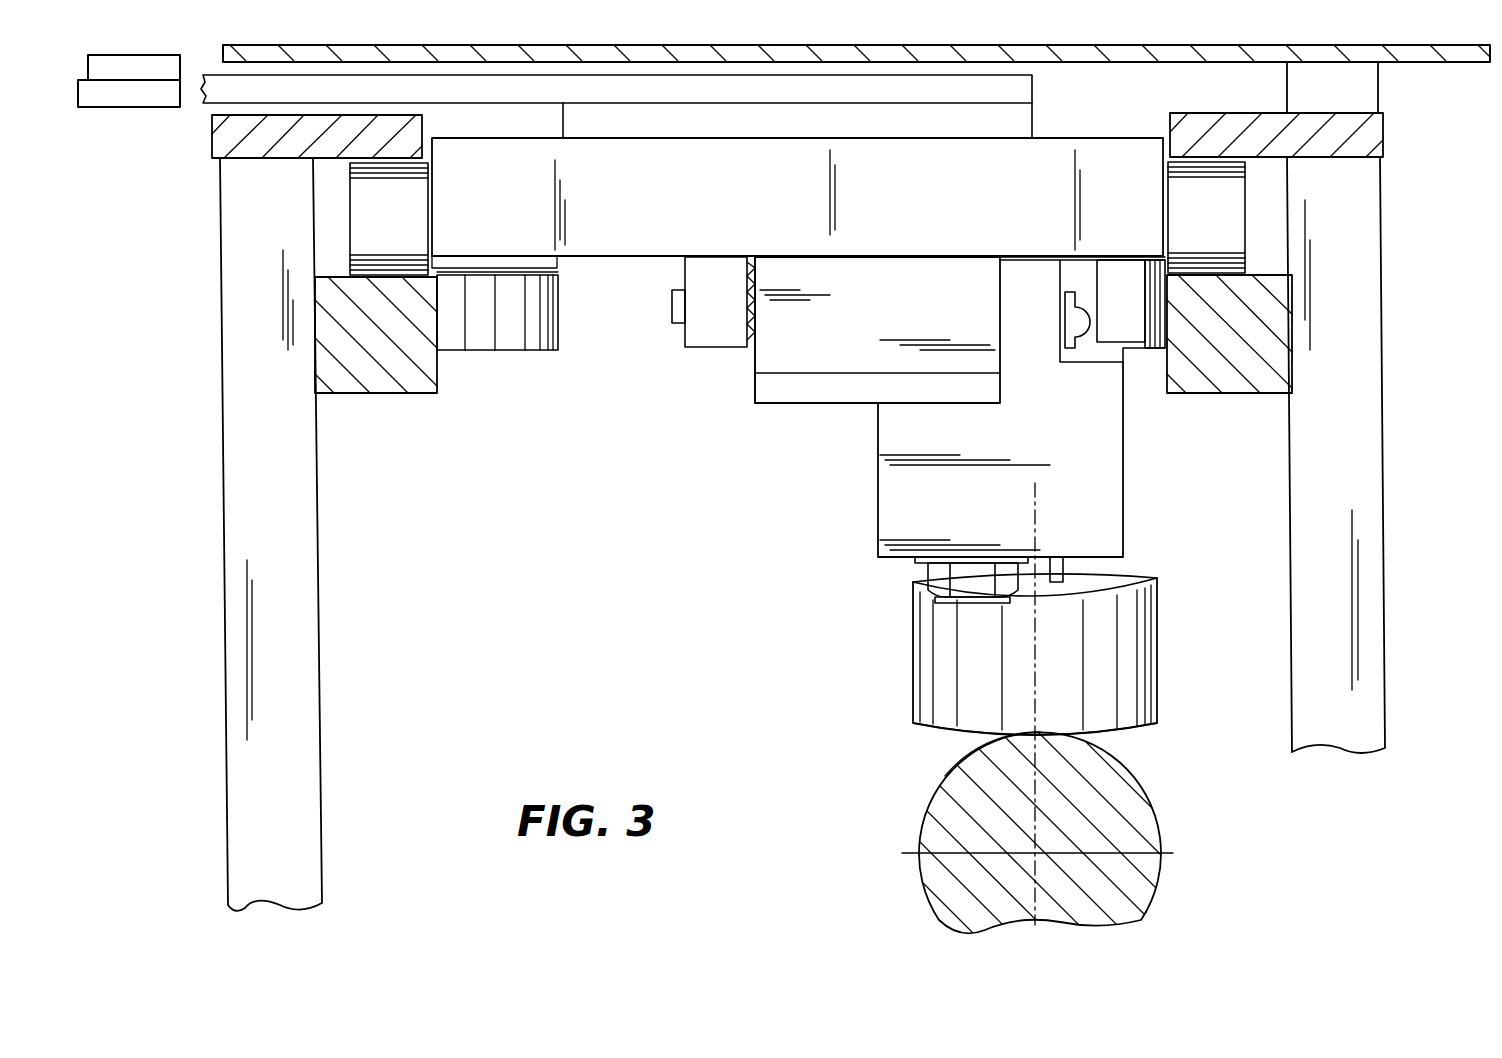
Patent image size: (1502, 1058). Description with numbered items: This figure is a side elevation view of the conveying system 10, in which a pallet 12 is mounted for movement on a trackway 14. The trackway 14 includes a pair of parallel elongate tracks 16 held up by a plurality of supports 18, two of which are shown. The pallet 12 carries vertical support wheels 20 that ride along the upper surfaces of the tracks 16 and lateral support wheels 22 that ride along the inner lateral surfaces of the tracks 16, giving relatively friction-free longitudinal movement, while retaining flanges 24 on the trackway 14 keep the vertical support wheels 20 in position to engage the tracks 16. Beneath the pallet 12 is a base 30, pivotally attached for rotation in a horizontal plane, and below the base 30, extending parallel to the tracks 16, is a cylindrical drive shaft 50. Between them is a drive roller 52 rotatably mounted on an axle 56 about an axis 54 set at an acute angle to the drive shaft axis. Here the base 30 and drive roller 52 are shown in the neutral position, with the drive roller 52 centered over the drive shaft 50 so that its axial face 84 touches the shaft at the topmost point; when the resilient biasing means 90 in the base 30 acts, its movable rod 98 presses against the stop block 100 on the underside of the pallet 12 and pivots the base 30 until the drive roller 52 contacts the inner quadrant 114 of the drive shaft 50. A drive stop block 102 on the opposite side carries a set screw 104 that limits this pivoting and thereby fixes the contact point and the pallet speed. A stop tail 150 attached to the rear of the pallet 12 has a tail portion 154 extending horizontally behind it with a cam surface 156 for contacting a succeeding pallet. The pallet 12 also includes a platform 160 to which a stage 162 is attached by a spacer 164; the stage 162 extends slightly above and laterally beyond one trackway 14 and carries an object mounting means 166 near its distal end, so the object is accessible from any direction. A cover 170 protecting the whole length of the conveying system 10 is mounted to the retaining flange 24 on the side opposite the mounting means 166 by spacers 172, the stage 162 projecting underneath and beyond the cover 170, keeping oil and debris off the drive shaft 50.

The conveying system 10 is at (565, 572).
The pallet 12 is at (1070, 132).
The trackway 14 is at (200, 258).
The elongate tracks 16 is at (388, 380).
The supports 18 is at (251, 531).
The vertical support wheels 20 is at (370, 197).
The lateral support wheels 22 is at (464, 320).
The retaining flanges 24 is at (228, 142).
The base 30 is at (981, 503).
The drive shaft 50 is at (915, 838).
The drive roller 52 is at (1097, 658).
The axis 54 is at (1040, 500).
The axle 56 is at (1068, 580).
The axial face 84 is at (940, 727).
The resilient biasing means 90 is at (1080, 282).
The movable rod 98 is at (1087, 332).
The stop block 100 is at (1141, 308).
The drive stop block 102 is at (689, 308).
The set screw 104 is at (678, 322).
The inner quadrant 114 is at (943, 780).
The stop tail 150 is at (805, 405).
The tail portion 154 is at (842, 405).
The cam surface 156 is at (917, 400).
The platform 160 is at (755, 228).
The stage 162 is at (164, 99).
The spacer 164 is at (628, 125).
The object mounting means 166 is at (182, 63).
The cover 170 is at (412, 52).
The spacers 172 is at (1305, 80).